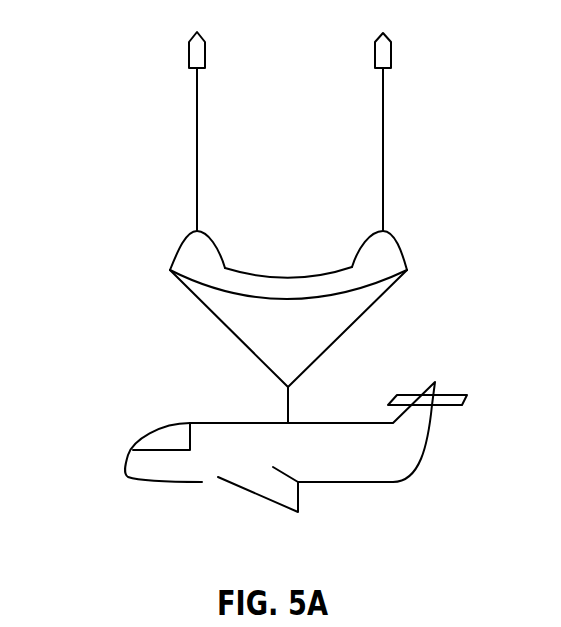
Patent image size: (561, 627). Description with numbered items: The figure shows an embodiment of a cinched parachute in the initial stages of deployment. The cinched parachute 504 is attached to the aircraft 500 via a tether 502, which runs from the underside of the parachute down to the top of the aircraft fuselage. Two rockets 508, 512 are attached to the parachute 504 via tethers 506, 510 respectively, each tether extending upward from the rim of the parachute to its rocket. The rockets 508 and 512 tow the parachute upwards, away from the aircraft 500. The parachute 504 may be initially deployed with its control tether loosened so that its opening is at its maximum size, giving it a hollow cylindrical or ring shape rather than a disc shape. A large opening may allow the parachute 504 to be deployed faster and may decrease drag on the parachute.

The aircraft 500 is at (123, 466).
The tether 502 is at (285, 404).
The cinched parachute 504 is at (170, 262).
The tether 506 is at (195, 153).
The rocket 508 is at (188, 55).
The tether 510 is at (381, 150).
The rocket 512 is at (376, 55).